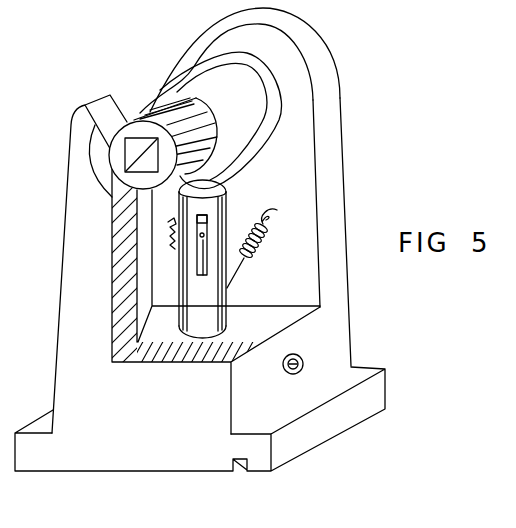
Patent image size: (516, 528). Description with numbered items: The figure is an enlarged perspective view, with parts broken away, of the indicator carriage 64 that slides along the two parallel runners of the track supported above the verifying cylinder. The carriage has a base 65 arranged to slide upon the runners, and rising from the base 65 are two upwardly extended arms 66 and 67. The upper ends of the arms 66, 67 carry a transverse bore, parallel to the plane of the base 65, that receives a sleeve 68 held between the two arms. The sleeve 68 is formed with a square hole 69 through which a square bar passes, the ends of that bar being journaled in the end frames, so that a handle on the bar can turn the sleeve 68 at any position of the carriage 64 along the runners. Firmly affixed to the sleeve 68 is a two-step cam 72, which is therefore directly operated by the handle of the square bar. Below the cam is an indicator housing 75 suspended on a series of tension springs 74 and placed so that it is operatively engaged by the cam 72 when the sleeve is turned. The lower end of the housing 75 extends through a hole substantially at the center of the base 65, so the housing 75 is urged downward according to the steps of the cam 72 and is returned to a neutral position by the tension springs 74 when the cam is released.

The indicator carriage 64 is at (343, 130).
The base 65 is at (85, 458).
The arm 66 is at (65, 242).
The arm 67 is at (325, 72).
The sleeve 68 is at (150, 108).
The square hole 69 is at (142, 150).
The two-step cam 72 is at (250, 151).
The tension springs 74 is at (168, 242).
The indicator housing 75 is at (225, 215).